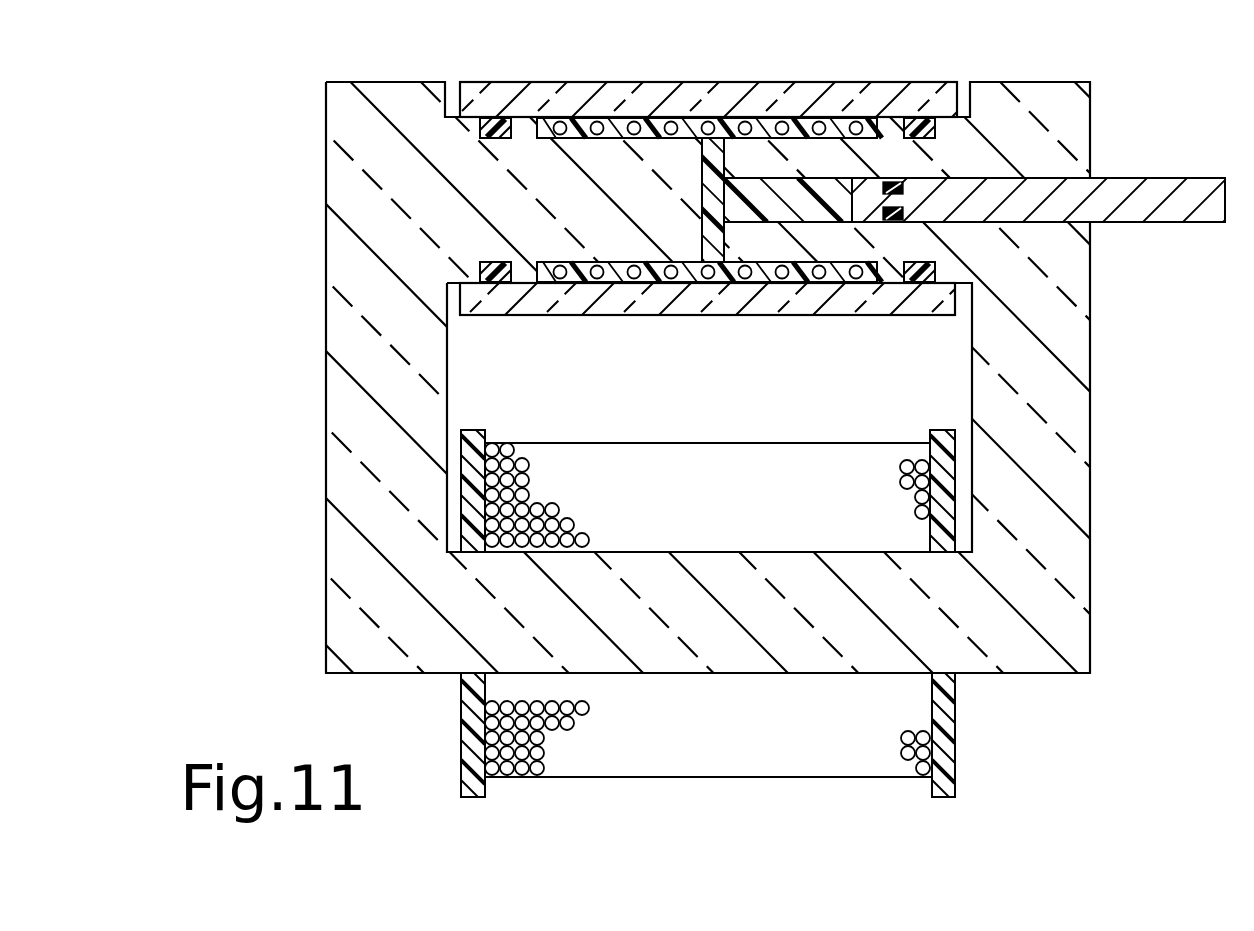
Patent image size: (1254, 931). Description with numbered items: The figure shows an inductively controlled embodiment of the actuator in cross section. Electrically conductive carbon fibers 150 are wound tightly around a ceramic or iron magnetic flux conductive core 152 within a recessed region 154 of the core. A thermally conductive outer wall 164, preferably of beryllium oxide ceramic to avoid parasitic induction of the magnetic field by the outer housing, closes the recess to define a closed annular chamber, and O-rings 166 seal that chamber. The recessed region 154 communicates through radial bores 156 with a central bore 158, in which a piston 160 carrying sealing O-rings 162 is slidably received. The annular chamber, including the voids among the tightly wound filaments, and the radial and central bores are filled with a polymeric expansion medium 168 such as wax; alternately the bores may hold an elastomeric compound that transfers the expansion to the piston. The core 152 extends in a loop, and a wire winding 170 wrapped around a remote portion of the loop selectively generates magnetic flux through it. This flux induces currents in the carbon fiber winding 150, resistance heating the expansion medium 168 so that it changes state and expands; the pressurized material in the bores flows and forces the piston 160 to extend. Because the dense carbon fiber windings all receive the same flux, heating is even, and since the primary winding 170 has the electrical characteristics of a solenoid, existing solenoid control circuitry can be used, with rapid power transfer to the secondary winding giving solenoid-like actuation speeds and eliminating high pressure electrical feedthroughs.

The electrically conductive carbon fibers 150 is at (853, 120).
The magnetic flux conductive core 152 is at (360, 322).
The recessed region 154 is at (863, 292).
The radial bores 156 is at (712, 183).
The central bore 158 is at (770, 175).
The piston 160 is at (1210, 178).
The sealing O-rings 162 is at (893, 207).
The thermally conductive outer wall 164 is at (633, 82).
The O-rings 166 is at (497, 117).
The polymeric expansion medium 168 is at (742, 180).
The wire winding 170 is at (745, 755).